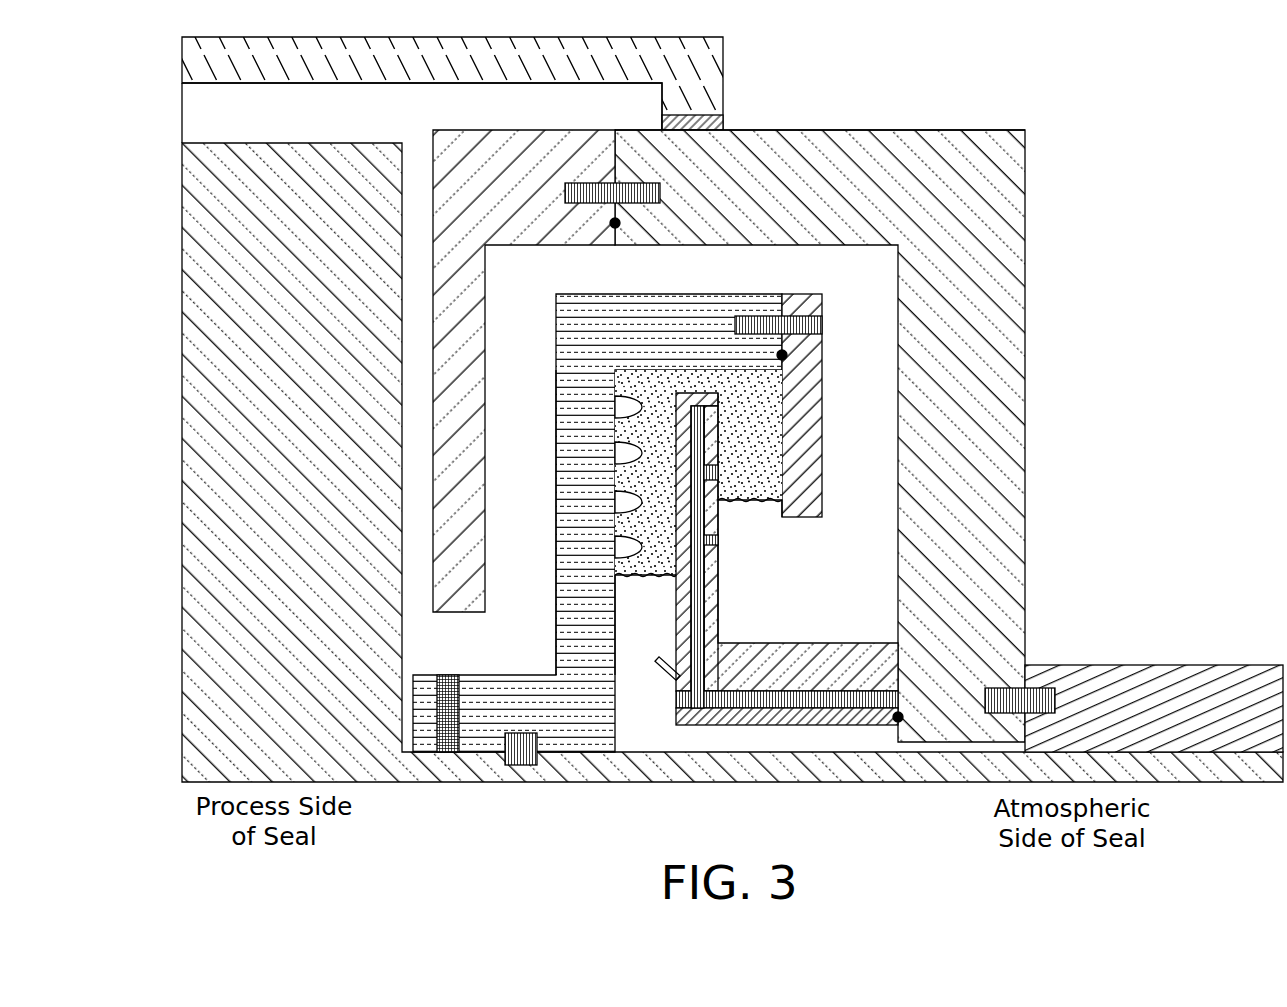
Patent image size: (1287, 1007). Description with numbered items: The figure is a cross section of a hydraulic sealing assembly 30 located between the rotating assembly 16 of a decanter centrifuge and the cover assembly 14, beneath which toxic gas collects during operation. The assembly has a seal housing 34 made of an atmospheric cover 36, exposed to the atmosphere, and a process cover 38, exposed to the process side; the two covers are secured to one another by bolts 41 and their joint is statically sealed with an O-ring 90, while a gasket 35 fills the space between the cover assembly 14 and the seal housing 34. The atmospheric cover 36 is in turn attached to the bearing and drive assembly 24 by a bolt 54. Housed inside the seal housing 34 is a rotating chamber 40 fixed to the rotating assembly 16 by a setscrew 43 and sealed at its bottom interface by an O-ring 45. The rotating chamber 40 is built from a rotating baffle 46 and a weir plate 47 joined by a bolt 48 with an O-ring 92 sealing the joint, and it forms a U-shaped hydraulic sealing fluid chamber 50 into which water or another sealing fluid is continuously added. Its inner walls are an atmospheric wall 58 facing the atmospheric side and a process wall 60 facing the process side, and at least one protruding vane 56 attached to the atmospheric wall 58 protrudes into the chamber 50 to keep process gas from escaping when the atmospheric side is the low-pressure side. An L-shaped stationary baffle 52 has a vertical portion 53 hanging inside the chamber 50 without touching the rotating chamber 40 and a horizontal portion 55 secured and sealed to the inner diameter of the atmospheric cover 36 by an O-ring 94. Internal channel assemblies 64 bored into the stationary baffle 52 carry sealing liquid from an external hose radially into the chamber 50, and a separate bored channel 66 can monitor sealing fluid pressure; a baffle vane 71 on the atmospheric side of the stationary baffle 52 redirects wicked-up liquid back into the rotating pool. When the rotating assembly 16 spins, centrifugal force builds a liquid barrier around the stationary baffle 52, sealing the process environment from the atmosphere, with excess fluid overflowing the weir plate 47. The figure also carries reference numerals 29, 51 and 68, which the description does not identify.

The cover assembly 14 is at (383, 53).
The rotating assembly 16 is at (225, 503).
The bearing & drive assembly 24 is at (1210, 665).
The process gas chamber 29 is at (260, 143).
The hydraulic sealing assembly 30 is at (848, 420).
The seal housing 34 is at (950, 130).
The gasket 35 is at (723, 117).
The atmospheric cover 36 is at (1003, 217).
The process cover 38 is at (523, 167).
The rotating chamber 40 is at (723, 293).
The bolts 41 is at (660, 193).
The setscrew 43 is at (448, 753).
The O-ring 45 is at (517, 765).
The rotating baffle 46 is at (553, 567).
The weir plate 47 is at (823, 379).
The bolt 48 is at (812, 325).
The hydraulic sealing fluid chamber 50 is at (760, 443).
The filler material 51 is at (655, 518).
The stationary baffle 52 is at (720, 615).
The vertical portion 53 is at (720, 573).
The bolt 54 is at (1040, 703).
The horizontal portion 55 is at (823, 643).
The protruding vane 56 is at (622, 398).
The atmospheric wall 58 is at (617, 618).
The process wall 60 is at (780, 508).
The internal channel assemblies 64 is at (692, 600).
The bored channel 66 is at (720, 468).
The contact 68 is at (720, 539).
The baffle vane 71 is at (660, 672).
The O-ring 90 is at (615, 223).
The O-ring 92 is at (786, 352).
The O-ring 94 is at (898, 717).